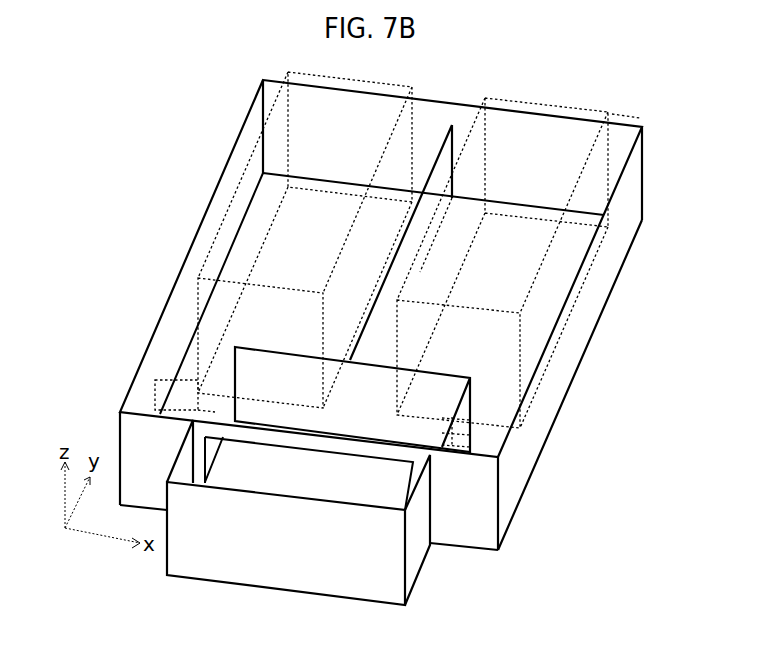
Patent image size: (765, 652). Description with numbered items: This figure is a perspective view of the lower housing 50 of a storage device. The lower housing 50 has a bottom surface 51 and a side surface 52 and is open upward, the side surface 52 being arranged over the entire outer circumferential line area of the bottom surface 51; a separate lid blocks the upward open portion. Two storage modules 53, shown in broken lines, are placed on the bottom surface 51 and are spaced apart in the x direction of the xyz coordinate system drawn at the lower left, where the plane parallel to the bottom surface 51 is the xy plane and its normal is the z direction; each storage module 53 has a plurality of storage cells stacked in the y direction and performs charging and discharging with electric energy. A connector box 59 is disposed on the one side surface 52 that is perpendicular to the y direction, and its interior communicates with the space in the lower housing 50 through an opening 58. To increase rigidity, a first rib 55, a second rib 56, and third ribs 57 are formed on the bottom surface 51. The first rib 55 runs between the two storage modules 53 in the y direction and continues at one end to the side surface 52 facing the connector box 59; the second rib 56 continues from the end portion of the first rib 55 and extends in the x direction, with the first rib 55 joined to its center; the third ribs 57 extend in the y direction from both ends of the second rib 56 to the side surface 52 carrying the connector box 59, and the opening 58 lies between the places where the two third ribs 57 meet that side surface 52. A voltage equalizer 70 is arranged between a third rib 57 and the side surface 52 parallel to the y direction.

The lower housing 50 is at (643, 183).
The bottom surface 51 is at (205, 395).
The side surface 52 is at (483, 520).
The storage module 53 is at (542, 102).
The first rib 55 is at (375, 328).
The second rib 56 is at (437, 386).
The third rib 57 is at (205, 398).
The opening 58 is at (207, 462).
The connector box 59 is at (388, 557).
The voltage equalizer 70 is at (227, 410).